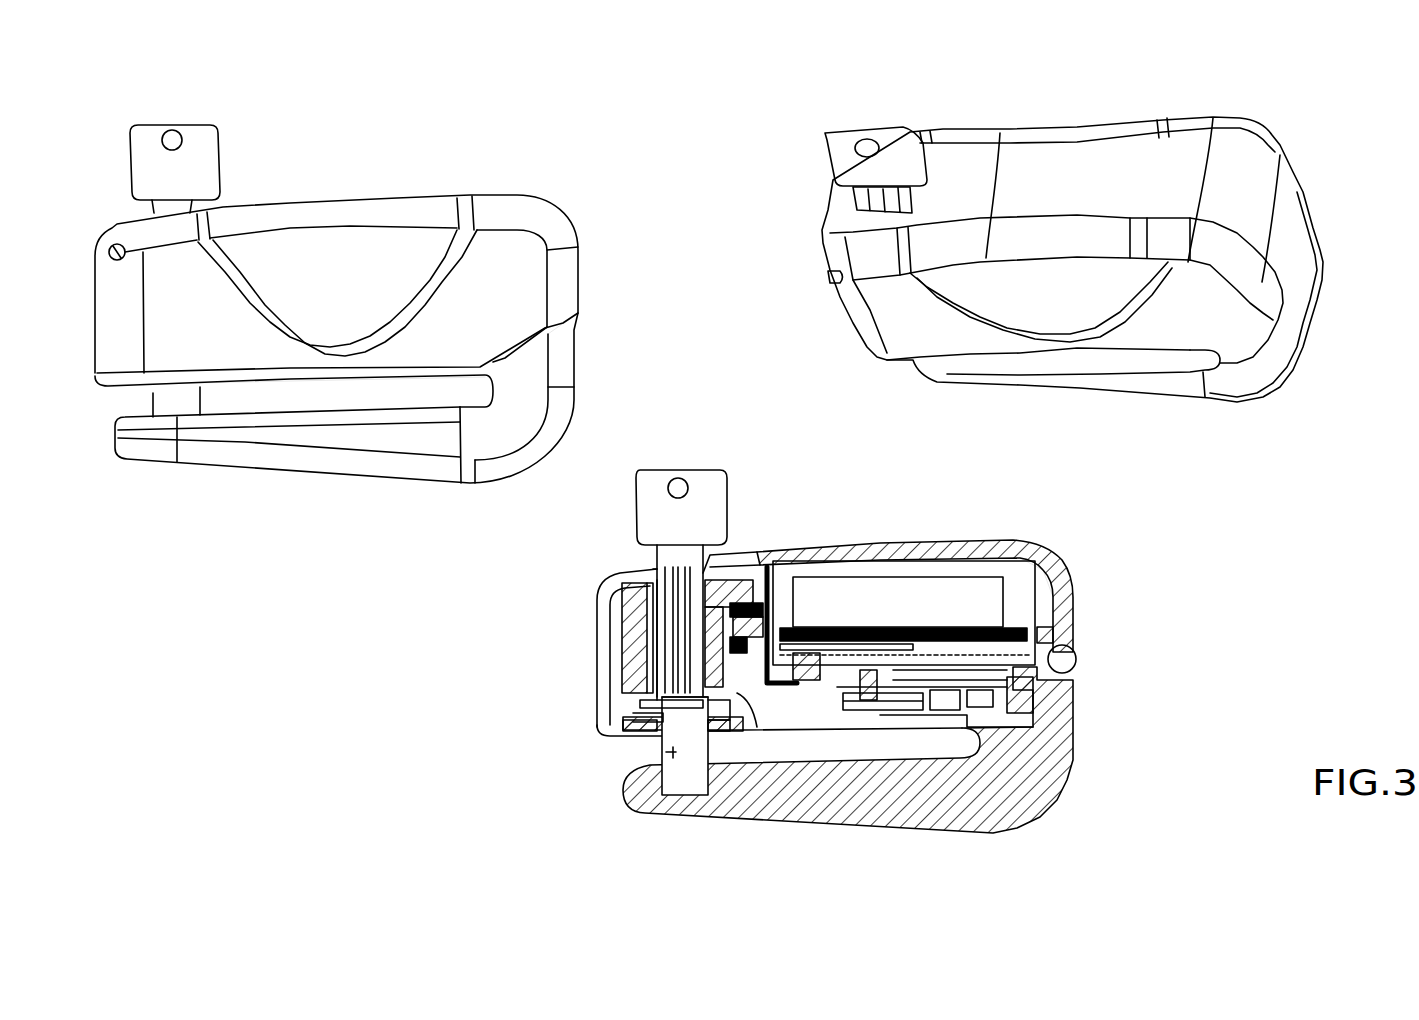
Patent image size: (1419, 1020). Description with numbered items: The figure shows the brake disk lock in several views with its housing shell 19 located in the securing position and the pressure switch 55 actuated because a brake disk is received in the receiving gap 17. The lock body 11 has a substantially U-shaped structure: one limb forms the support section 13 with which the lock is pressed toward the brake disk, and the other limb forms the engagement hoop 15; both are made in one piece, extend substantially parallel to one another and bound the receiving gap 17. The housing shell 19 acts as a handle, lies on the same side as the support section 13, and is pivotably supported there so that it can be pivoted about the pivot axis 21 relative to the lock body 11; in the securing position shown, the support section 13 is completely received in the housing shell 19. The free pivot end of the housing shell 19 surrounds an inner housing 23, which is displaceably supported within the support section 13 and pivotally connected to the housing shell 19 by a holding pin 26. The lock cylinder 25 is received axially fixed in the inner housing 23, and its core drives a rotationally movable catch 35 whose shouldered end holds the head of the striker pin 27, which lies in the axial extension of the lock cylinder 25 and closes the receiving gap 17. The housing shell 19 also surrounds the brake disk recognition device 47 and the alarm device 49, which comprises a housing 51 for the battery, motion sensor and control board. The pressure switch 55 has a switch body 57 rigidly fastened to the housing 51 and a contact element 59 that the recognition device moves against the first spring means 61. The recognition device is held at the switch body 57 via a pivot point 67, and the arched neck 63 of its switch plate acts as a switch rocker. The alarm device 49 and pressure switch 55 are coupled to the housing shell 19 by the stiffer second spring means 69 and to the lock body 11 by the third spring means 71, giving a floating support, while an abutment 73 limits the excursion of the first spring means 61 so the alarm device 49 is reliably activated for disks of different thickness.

The lock body 11 is at (580, 396).
The support section 13 is at (650, 725).
The engagement hoop 15 is at (327, 457).
The receiving gap 17 is at (278, 391).
The housing shell 19 is at (375, 215).
The pivot axis 21 is at (1062, 660).
The inner housing 23 is at (617, 573).
The lock cylinder 25 is at (640, 567).
The holding pin 26 is at (113, 244).
The striker pin 27 is at (168, 402).
The catch 35 is at (630, 637).
The brake disk recognition device 47 is at (887, 717).
The alarm device 49 is at (1037, 573).
The housing 51 is at (970, 557).
The pressure switch 55 is at (933, 658).
The switch body 57 is at (873, 627).
The contact element 59 is at (843, 627).
The first spring means 61 is at (827, 697).
The arched neck 63 is at (800, 693).
The pivot point 67 is at (850, 720).
The second spring means 69 is at (757, 590).
The third spring means 71 is at (655, 700).
The abutment 73 is at (753, 720).